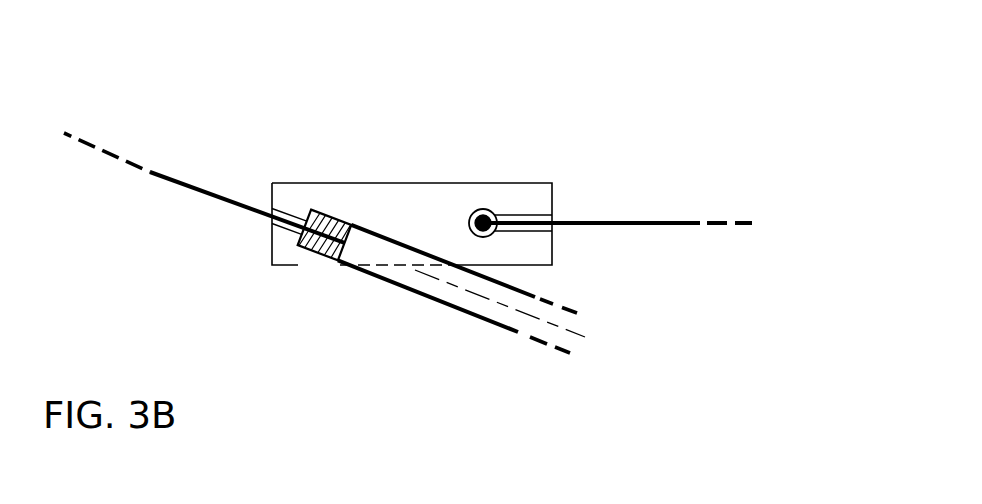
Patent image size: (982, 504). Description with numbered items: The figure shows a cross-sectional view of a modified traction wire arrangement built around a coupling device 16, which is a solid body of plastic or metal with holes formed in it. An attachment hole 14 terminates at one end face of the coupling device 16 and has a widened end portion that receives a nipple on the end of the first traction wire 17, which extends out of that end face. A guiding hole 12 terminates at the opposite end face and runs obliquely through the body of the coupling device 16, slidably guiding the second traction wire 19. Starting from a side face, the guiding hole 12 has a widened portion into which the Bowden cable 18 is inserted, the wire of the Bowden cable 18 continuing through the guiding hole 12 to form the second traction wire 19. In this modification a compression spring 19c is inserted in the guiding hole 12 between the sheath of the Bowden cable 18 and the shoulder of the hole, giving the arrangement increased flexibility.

The guiding hole 12 is at (288, 228).
The attachment hole 14 is at (522, 216).
The coupling device 16 is at (407, 192).
The first traction wire 17 is at (646, 223).
The Bowden cable 18 is at (465, 310).
The second traction wire 19 is at (202, 190).
The compression spring 19c is at (332, 255).